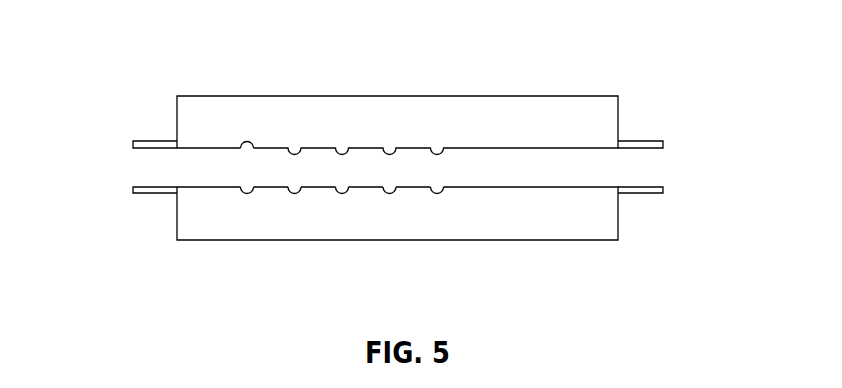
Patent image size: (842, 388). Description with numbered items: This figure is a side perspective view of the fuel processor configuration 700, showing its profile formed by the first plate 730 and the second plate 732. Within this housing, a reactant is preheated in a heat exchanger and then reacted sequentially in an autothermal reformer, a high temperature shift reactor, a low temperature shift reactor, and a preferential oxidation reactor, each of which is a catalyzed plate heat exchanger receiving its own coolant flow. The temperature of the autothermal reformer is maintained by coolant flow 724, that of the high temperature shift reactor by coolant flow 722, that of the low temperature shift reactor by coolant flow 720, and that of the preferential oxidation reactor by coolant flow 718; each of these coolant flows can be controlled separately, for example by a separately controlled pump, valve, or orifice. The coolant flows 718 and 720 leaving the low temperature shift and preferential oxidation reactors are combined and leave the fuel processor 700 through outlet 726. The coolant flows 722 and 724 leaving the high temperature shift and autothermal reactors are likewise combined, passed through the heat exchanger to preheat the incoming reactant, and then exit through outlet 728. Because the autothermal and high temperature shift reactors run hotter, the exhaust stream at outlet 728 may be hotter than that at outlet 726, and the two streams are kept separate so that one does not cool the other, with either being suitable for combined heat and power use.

The fuel processor configuration 700 is at (650, 77).
The coolant flow 718 is at (501, 241).
The coolant flow 720 is at (440, 242).
The coolant flow 722 is at (384, 241).
The coolant flow 724 is at (328, 232).
The outlet 726 is at (292, 109).
The outlet 728 is at (283, 245).
The first plate 730 is at (361, 112).
The second plate 732 is at (361, 245).